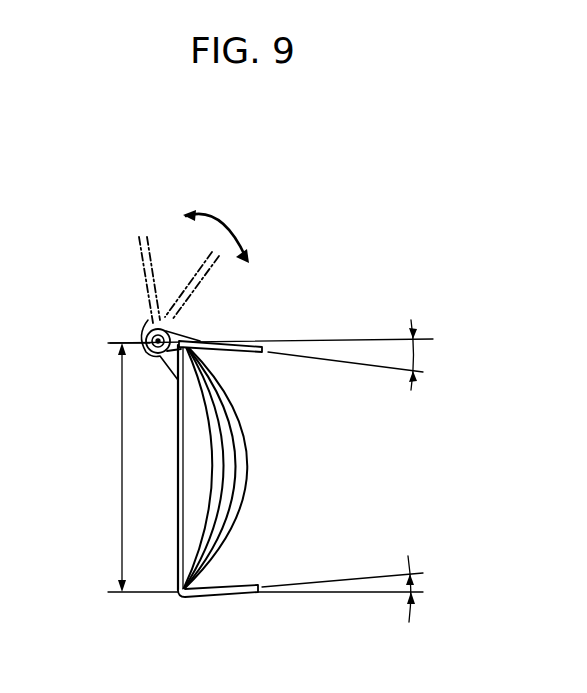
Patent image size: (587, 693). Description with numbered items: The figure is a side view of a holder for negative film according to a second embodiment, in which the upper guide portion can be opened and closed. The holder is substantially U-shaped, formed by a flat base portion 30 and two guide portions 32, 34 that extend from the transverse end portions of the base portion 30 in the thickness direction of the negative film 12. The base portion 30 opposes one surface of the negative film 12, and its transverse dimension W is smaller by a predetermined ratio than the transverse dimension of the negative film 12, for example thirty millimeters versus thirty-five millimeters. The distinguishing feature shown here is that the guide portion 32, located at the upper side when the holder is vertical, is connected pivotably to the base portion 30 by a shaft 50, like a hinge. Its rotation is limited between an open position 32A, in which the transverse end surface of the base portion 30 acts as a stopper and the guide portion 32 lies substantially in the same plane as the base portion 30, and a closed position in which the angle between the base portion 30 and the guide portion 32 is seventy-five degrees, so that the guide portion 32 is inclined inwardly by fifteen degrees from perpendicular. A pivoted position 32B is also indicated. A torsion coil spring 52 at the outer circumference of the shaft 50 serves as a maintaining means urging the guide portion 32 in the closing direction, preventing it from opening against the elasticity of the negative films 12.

The negative film 12 is at (243, 466).
The base portion 30 is at (186, 443).
The guide portion 32 is at (247, 345).
The open position 32A is at (142, 266).
The vane in second pivoted position 32B is at (220, 268).
The guide portion 34 is at (221, 598).
The shaft 50 is at (157, 359).
The torsion coil spring 52 is at (145, 334).
The dimension W is at (120, 458).